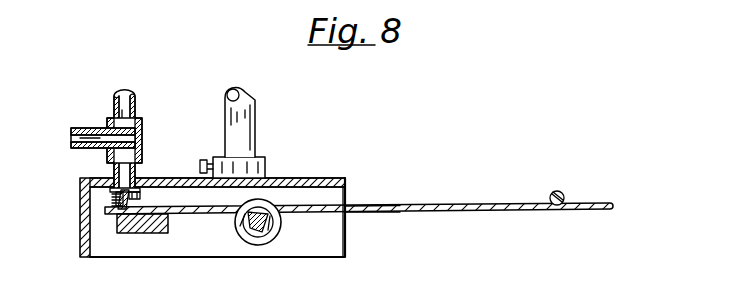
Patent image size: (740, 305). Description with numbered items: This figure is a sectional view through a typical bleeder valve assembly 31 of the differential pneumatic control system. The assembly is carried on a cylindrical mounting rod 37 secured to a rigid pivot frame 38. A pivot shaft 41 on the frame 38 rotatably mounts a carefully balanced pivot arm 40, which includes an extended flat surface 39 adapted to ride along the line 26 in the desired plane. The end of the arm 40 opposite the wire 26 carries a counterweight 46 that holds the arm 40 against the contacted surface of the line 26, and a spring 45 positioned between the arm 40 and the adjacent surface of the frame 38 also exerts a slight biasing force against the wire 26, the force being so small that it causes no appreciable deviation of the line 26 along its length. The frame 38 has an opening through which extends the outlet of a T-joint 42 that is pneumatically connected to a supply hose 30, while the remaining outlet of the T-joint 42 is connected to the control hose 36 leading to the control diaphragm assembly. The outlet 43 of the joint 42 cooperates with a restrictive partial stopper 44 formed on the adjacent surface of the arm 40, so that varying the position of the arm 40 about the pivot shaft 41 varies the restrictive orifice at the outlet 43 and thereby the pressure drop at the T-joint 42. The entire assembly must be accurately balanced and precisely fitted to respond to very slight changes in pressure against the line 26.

The line 26 is at (563, 192).
The supply hose 30 is at (113, 96).
The bleeder valve assembly 31 is at (79, 190).
The control hose 36 is at (84, 129).
The cylindrical mounting rod 37 is at (256, 101).
The pivot frame 38 is at (332, 183).
The flat surface 39 is at (482, 205).
The pivot arm 40 is at (366, 216).
The pivot shaft 41 is at (276, 226).
The T-joint 42 is at (143, 152).
The outlet 43 is at (136, 180).
The restrictive partial stopper 44 is at (122, 210).
The spring 45 is at (141, 196).
The counterweight 46 is at (142, 229).